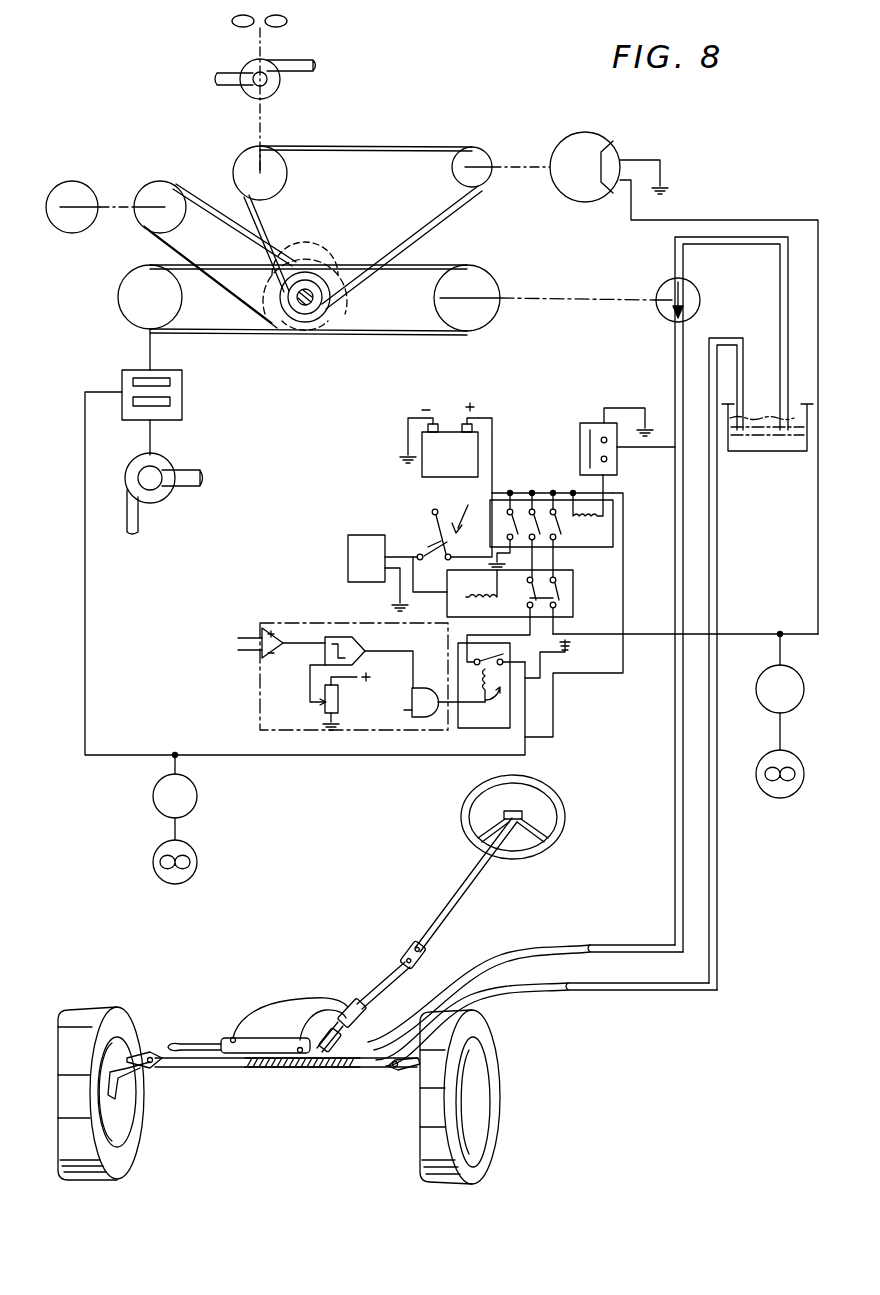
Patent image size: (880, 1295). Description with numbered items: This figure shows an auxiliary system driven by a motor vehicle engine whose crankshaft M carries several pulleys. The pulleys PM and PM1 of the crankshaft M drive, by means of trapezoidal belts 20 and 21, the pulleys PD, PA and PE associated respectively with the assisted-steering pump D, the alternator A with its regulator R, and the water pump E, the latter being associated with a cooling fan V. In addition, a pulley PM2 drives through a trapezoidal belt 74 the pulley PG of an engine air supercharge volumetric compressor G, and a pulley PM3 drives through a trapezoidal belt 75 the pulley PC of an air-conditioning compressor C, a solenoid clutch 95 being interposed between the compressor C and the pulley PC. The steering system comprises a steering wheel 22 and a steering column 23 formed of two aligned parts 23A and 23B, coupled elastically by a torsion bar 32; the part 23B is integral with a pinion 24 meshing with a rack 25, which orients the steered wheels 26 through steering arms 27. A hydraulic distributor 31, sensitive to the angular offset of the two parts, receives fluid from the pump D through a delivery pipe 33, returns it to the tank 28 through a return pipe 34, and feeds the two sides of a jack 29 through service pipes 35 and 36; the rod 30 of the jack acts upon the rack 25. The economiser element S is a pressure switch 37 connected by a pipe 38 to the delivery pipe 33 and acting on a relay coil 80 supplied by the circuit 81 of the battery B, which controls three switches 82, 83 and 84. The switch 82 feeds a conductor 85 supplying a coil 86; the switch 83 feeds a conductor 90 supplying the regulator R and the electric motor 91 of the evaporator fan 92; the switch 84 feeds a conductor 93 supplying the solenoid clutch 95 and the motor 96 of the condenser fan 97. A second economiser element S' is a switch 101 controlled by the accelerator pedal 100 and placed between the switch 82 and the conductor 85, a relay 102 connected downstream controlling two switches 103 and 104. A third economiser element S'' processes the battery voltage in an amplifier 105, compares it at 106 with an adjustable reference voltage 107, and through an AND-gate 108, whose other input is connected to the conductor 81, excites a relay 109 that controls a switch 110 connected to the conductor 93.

The cooling fan V is at (232, 21).
The water pump E is at (246, 68).
The engine air supercharge volumetric compressor G is at (70, 183).
The pulley PG is at (148, 184).
The trapezoidal belt 74 is at (206, 190).
The pulley PE is at (289, 171).
The trapezoidal belt 21 is at (378, 146).
The pulley PA is at (472, 147).
The alternator A is at (579, 133).
The regulator R is at (620, 156).
The crankshaft pulley PM1 is at (297, 265).
The crankshaft pulley PM2 is at (330, 263).
The crankshaft pulley PM3 is at (274, 299).
The crankshaft pulley PM is at (298, 330).
The crankshaft M is at (312, 308).
The pulley PC is at (144, 272).
The trapezoidal belt 75 is at (228, 263).
The trapezoidal belt 20 is at (393, 333).
The pulley PD is at (490, 286).
The assisted-steering pump D is at (663, 284).
The delivery pipe 33 is at (673, 886).
The return pipe 34 is at (718, 896).
The tank 28 is at (760, 455).
The pipe 38 is at (656, 456).
The conductor 90 is at (745, 632).
The electric drive motor 91 is at (791, 700).
The evaporator fan 92 is at (780, 799).
The solenoid clutch 95 is at (183, 391).
The air-conditioning compressor C is at (150, 503).
The conductor 93 is at (125, 752).
The electric drive motor 96 is at (153, 797).
The condenser fan 97 is at (153, 862).
The battery B is at (458, 468).
The circuit 81 is at (493, 422).
The relay coil 80 is at (588, 548).
The switch 82 is at (510, 509).
The switch 84 is at (532, 509).
The switch 83 is at (553, 509).
The pressure switch 37 is at (588, 422).
The economiser element S is at (552, 415).
The coil 86 is at (363, 535).
The conductor 85 is at (392, 552).
The economiser element S' is at (434, 516).
The accelerator pedal 100 is at (462, 511).
The switch 101 is at (430, 576).
The relay 102 is at (510, 593).
The switch 103 is at (560, 597).
The switch 104 is at (560, 607).
The economiser element S'' is at (354, 645).
The amplifier 105 is at (262, 628).
The comparator 106 is at (362, 647).
The reference voltage 107 is at (340, 702).
The AND-gate 108 is at (430, 686).
The switch 110 is at (492, 644).
The relay 109 is at (482, 698).
The steering wheel 22 is at (520, 859).
The steering column 23 is at (468, 892).
The steering column part 23A is at (412, 947).
The torsion bar 32 is at (380, 986).
The hydraulic distributor 31 is at (355, 1003).
The steering column part 23B is at (340, 1068).
The service pipe 35 is at (296, 1000).
The service pipe 36 is at (316, 1010).
The jack 29 is at (255, 1036).
The rod 30 is at (211, 1042).
The rack 25 is at (252, 1070).
The pinion 24 is at (312, 1070).
The steering arms 27 is at (158, 1052).
The steered wheels 26 is at (130, 1152).